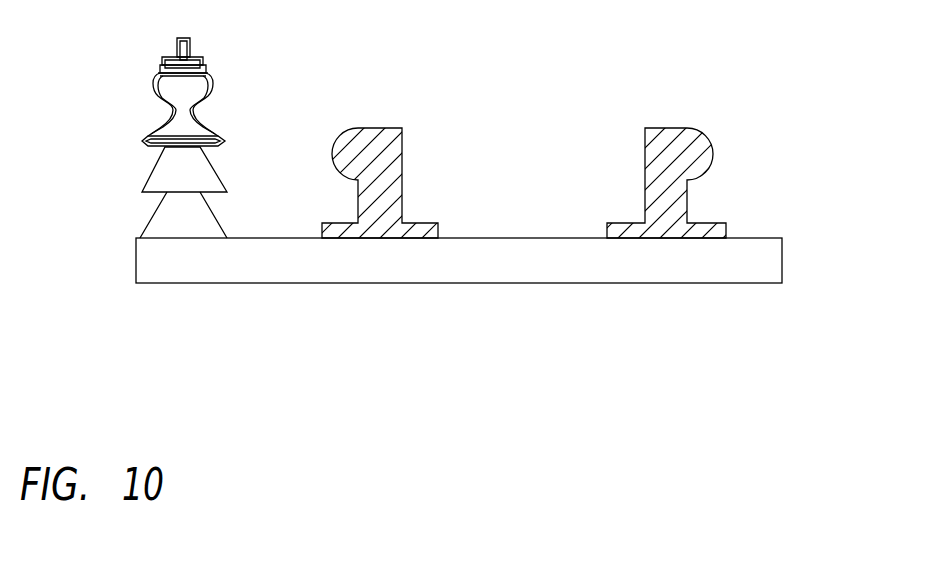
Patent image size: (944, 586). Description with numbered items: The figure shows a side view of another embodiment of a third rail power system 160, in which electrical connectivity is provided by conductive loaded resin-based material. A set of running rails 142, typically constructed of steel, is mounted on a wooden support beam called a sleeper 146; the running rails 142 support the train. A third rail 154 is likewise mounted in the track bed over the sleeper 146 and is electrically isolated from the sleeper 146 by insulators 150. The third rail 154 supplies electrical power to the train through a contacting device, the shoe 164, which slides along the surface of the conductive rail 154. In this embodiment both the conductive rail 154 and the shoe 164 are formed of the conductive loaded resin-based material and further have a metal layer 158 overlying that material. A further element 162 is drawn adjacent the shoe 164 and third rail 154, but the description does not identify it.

The running rails 142 is at (373, 132).
The sleeper 146 is at (563, 265).
The insulators 150 is at (165, 212).
The third rail 154 is at (175, 135).
The metal layer 158 is at (190, 63).
The third rail power system 160 is at (788, 60).
The spring shell 162 is at (203, 128).
The shoe 164 is at (183, 36).